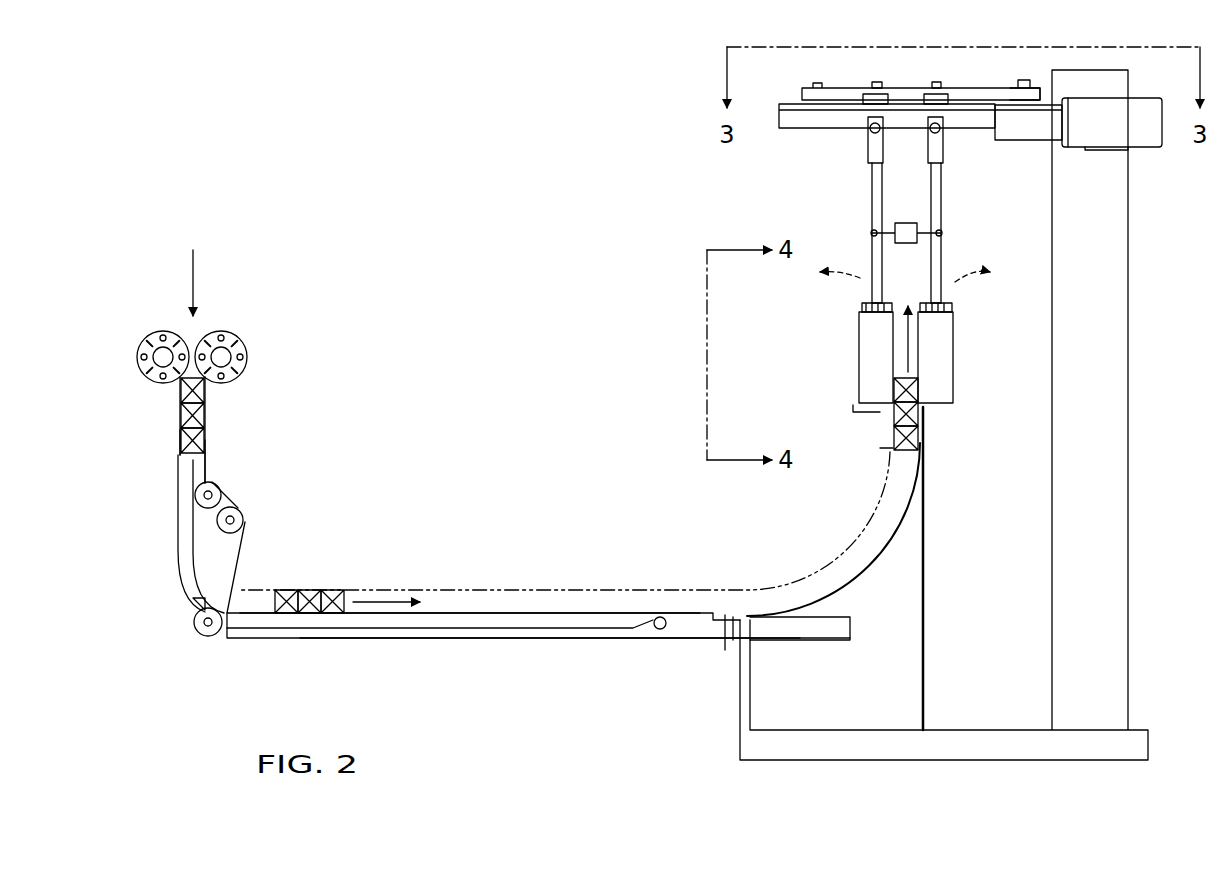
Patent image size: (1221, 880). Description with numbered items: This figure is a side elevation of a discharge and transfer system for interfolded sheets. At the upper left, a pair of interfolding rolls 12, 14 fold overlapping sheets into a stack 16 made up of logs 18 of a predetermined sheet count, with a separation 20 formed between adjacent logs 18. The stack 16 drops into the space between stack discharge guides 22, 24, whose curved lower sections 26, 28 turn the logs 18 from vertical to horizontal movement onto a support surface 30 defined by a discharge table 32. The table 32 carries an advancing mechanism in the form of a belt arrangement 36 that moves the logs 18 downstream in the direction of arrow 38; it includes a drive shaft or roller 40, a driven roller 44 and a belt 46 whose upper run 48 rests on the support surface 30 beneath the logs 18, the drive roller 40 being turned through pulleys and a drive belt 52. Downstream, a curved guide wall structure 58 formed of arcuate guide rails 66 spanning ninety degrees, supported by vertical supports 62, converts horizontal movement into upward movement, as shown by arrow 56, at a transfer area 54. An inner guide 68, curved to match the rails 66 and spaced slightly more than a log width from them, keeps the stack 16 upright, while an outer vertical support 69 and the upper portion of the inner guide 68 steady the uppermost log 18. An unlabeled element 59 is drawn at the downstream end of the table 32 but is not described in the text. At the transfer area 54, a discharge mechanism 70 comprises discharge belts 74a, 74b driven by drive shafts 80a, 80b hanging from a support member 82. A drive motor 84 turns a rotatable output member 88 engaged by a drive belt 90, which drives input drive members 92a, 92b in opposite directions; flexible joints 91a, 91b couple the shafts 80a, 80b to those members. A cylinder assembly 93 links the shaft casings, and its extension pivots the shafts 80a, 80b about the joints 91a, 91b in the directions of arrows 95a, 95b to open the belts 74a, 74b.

The interfolding roll 12 is at (154, 326).
The interfolding roll 14 is at (232, 326).
The stack of interfolded sheets 16 is at (213, 450).
The log of interfolded sheets 18 is at (205, 440).
The separation 20 is at (557, 531).
The stack discharge guide 22 is at (175, 457).
The stack discharge guide 24 is at (213, 461).
The curved lower section 26 is at (196, 609).
The curved lower section 28 is at (218, 577).
The support surface 30 is at (688, 618).
The discharge table 32 is at (665, 656).
The belt arrangement 36 is at (604, 607).
The arrow 38 is at (390, 590).
The drive shaft or roller 40 is at (200, 634).
The driven shaft or roller 44 is at (653, 629).
The belt 46 is at (548, 640).
The upper run 48 is at (553, 613).
The drive belt 52 is at (190, 537).
The transfer area 54 is at (918, 355).
The arrow 56 is at (898, 328).
The curved guide wall structure 58 is at (897, 562).
The stop post 59 is at (725, 646).
The vertical support 62 is at (925, 665).
The arcuate guide rail 66 is at (906, 500).
The inner guide 68 is at (892, 432).
The outer vertical support 69 is at (920, 370).
The discharge mechanism 70 is at (958, 295).
The discharge belt 74a is at (859, 340).
The discharge belt 74b is at (953, 325).
The drive shaft 80a is at (872, 182).
The drive shaft 80b is at (941, 186).
The support member 82 is at (779, 112).
The drive motor 84 is at (1150, 148).
The rotatable output member 88 is at (1032, 88).
The drive belt 90 is at (980, 88).
The flexible joint 91a is at (866, 131).
The flexible joint 91b is at (945, 131).
The input drive member 92a is at (873, 94).
The input drive member 92b is at (935, 94).
The cylinder assembly 93 is at (892, 226).
The arrow 95a is at (858, 282).
The arrow 95b is at (970, 280).